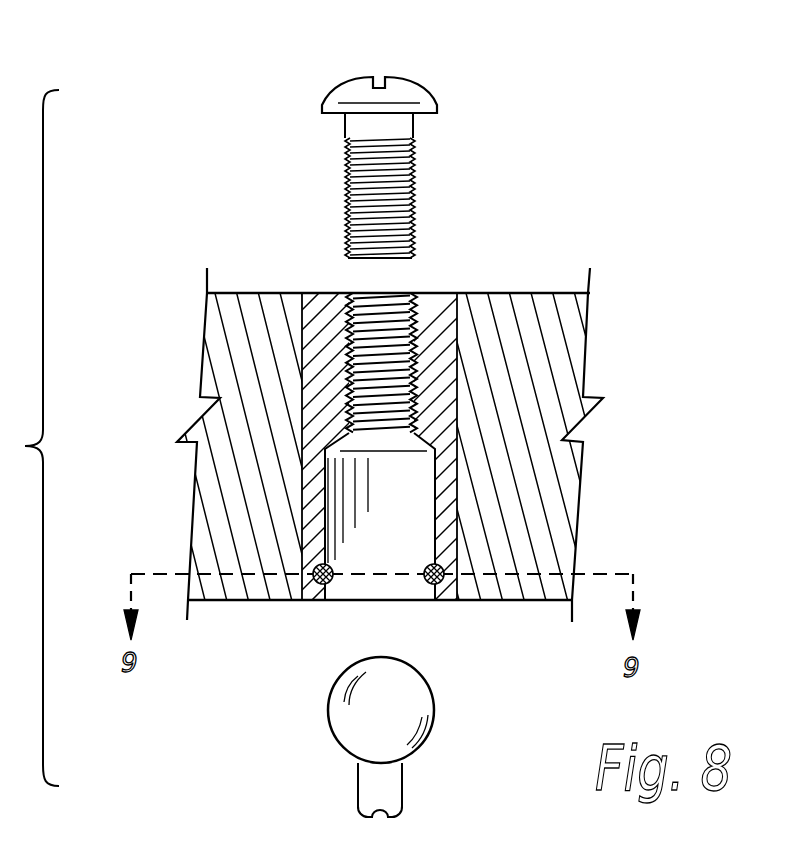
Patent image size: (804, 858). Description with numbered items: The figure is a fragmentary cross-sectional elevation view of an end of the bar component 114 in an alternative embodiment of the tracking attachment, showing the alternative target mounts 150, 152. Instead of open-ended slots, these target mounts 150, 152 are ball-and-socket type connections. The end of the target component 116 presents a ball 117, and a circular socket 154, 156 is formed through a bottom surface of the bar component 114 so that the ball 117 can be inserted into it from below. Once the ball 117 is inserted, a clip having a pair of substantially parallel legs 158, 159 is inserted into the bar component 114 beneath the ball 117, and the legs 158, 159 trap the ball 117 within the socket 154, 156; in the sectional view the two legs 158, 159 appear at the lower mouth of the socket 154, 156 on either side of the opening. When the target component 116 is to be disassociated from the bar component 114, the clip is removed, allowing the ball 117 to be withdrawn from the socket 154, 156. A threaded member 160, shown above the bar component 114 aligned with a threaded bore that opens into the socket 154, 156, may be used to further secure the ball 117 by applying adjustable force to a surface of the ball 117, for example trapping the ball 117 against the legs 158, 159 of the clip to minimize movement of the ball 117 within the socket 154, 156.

The threaded member 160 is at (348, 82).
The target mount 150 is at (398, 367).
The target mount 152 is at (552, 182).
The bar component 114 is at (252, 303).
The socket 154 is at (310, 571).
The socket 156 is at (343, 641).
The leg 158 is at (331, 584).
The leg 159 is at (431, 584).
The target component 116 is at (450, 781).
The ball 117 is at (357, 723).